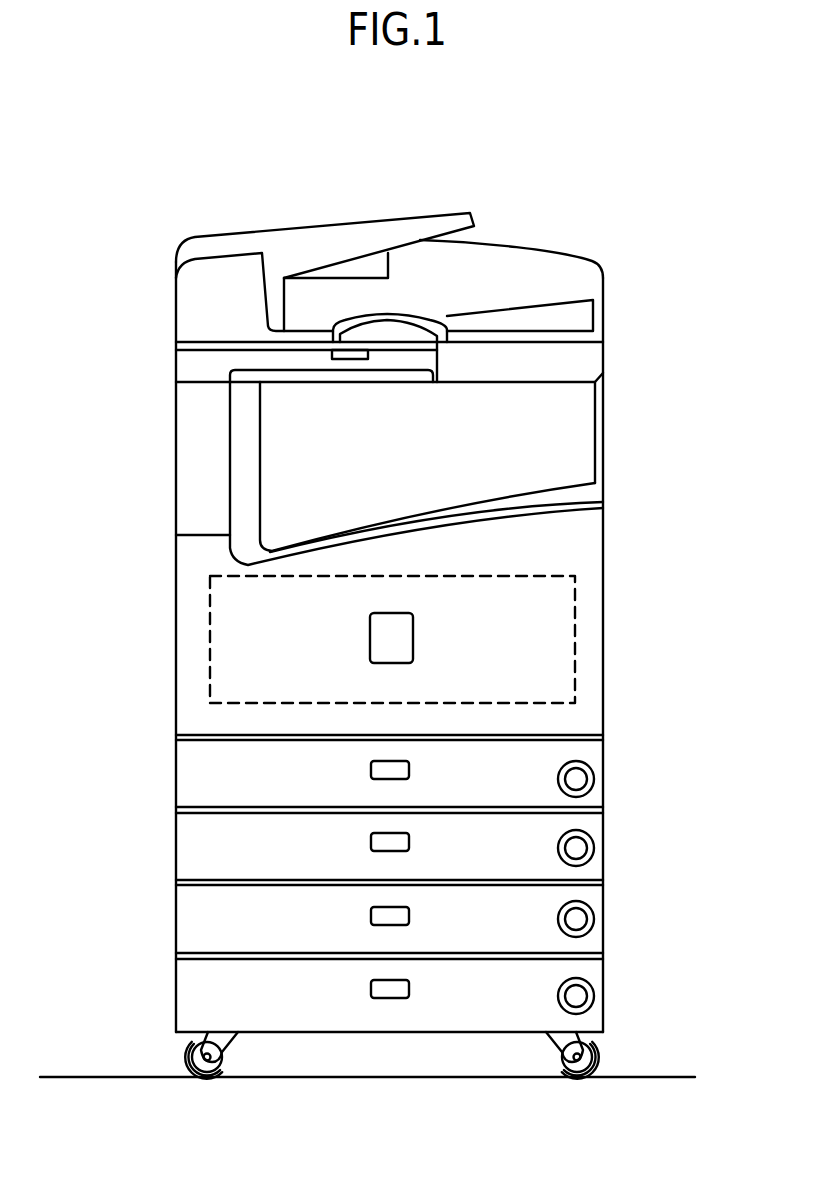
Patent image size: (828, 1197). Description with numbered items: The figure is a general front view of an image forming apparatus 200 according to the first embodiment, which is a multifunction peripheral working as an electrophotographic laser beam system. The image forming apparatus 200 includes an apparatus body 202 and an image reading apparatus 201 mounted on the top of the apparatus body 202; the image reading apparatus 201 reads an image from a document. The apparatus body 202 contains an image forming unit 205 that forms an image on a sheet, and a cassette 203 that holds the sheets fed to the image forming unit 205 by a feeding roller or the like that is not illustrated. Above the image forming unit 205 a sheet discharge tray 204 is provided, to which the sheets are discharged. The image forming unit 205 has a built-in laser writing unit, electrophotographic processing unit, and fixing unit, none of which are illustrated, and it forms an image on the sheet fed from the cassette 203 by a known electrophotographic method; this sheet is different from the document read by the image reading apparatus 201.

The image forming apparatus 200 is at (388, 177).
The image reading apparatus 201 is at (160, 299).
The apparatus body 202 is at (166, 464).
The cassette 203 is at (192, 915).
The sheet discharge tray 204 is at (458, 502).
The image forming unit 205 is at (552, 573).